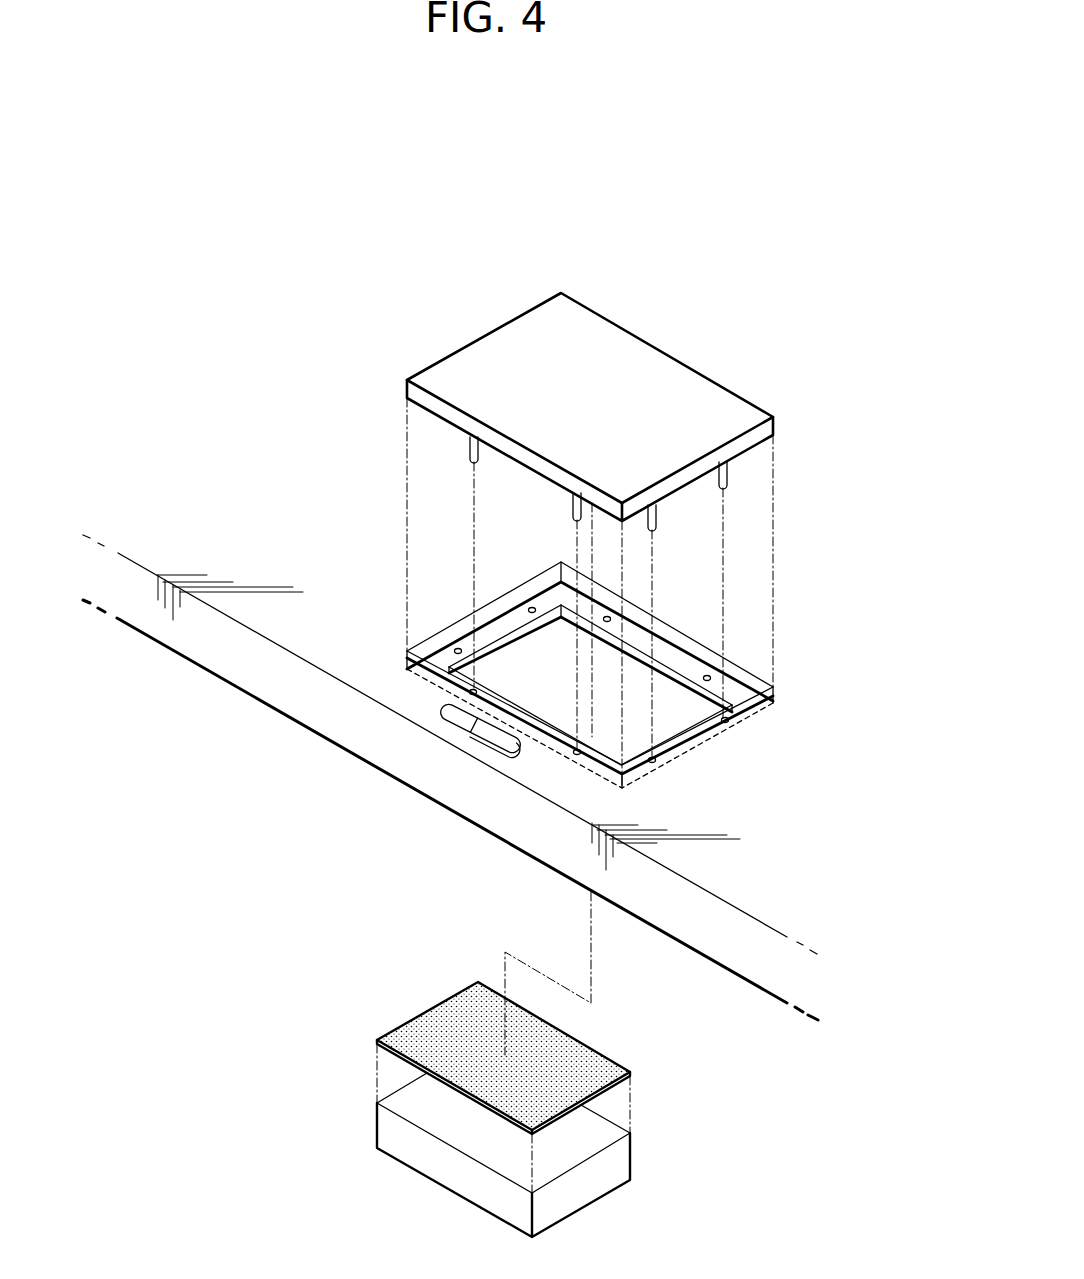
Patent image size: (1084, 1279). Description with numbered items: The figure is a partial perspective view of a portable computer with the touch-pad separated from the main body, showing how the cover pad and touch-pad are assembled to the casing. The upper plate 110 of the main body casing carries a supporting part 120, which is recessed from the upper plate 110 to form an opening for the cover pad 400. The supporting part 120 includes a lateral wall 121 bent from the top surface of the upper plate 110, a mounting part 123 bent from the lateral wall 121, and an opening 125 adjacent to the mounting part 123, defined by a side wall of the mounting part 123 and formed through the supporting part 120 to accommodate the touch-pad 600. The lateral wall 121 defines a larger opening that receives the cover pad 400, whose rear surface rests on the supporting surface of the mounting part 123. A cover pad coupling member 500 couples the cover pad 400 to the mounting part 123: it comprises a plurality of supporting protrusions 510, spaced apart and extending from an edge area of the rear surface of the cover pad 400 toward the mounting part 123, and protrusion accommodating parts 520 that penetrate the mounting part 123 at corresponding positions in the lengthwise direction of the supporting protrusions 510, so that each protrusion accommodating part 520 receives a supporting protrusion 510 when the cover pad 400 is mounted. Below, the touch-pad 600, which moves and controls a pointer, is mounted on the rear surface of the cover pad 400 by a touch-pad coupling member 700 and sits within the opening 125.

The upper plate 110 is at (320, 648).
The supporting part 120 is at (675, 675).
The lateral wall 121 is at (743, 676).
The mounting part 123 is at (683, 660).
The opening 125 is at (668, 700).
The cover pad 400 is at (723, 403).
The cover pad coupling member 500 is at (303, 478).
The supporting protrusion 510 is at (572, 510).
The protrusion accommodating part 520 is at (532, 610).
The touch-pad 600 is at (387, 1130).
The touch-pad coupling member 700 is at (413, 1033).